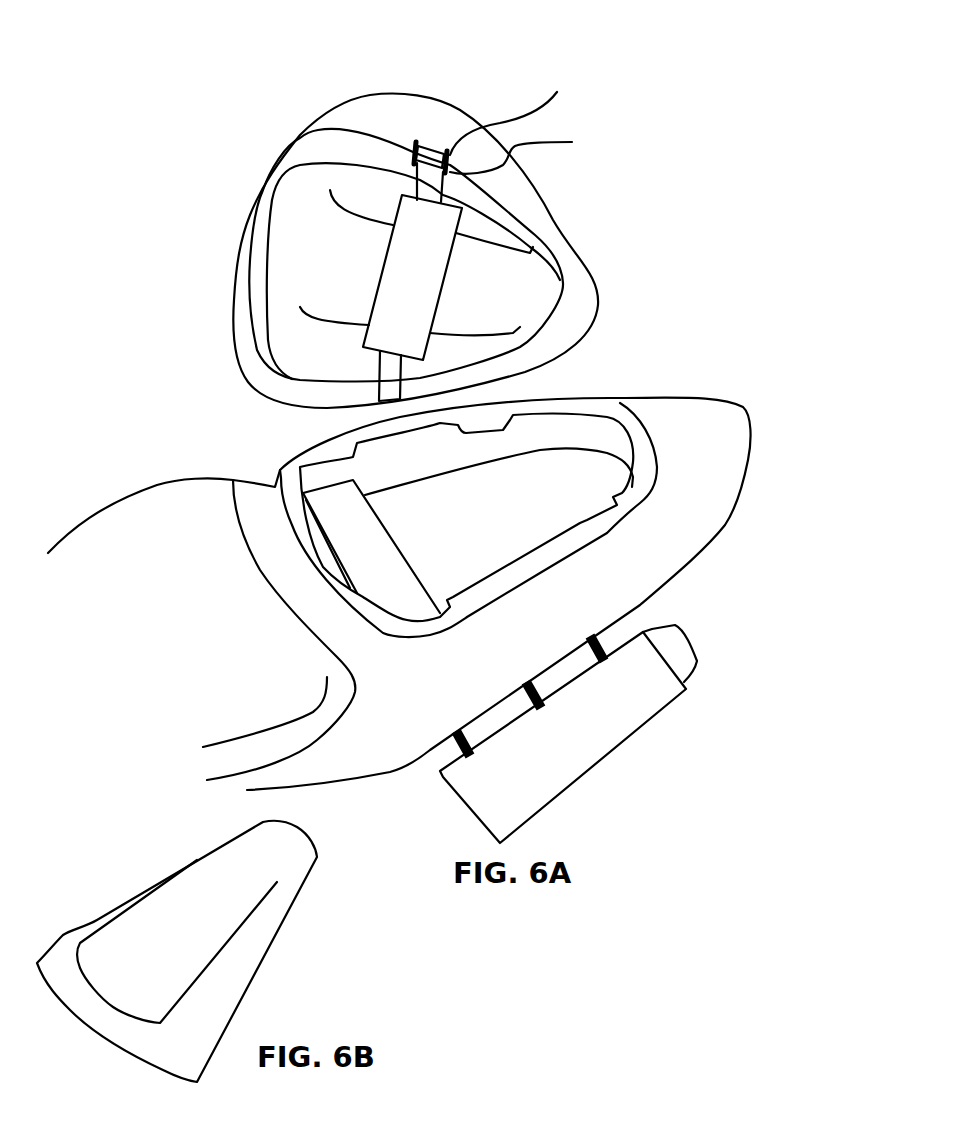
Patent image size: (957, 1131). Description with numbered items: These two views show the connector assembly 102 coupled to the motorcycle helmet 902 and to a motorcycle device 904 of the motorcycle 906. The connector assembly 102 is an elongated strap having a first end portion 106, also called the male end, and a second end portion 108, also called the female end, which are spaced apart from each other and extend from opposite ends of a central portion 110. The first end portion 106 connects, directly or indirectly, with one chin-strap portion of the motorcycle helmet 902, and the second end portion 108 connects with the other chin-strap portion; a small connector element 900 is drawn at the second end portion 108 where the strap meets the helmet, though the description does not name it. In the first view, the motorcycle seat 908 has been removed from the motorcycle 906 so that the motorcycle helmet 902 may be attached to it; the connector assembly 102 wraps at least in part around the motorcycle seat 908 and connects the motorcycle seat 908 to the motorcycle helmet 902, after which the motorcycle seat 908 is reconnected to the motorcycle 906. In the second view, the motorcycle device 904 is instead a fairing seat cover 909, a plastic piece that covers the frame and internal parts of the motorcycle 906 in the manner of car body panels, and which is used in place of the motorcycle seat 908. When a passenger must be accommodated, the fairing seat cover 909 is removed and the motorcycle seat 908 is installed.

In FIG. 6A, the connector assembly 102 is at (660, 143).
In FIG. 6A, the first end portion 106 is at (378, 373).
In FIG. 6A, the second end portion 108 is at (539, 153).
In FIG. 6A, the central portion 110 is at (430, 285).
In FIG. 6A, the connector 900 is at (494, 132).
In FIG. 6A, the motorcycle helmet 902 is at (447, 103).
In FIG. 6A, the motorcycle device 904 is at (687, 310).
In FIG. 6B, the motorcycle device 904 is at (55, 806).
In FIG. 6A, the motorcycle 906 is at (155, 482).
In FIG. 6A, the motorcycle seat 908 is at (597, 300).
In FIG. 6B, the fairing seat cover 909 is at (87, 917).